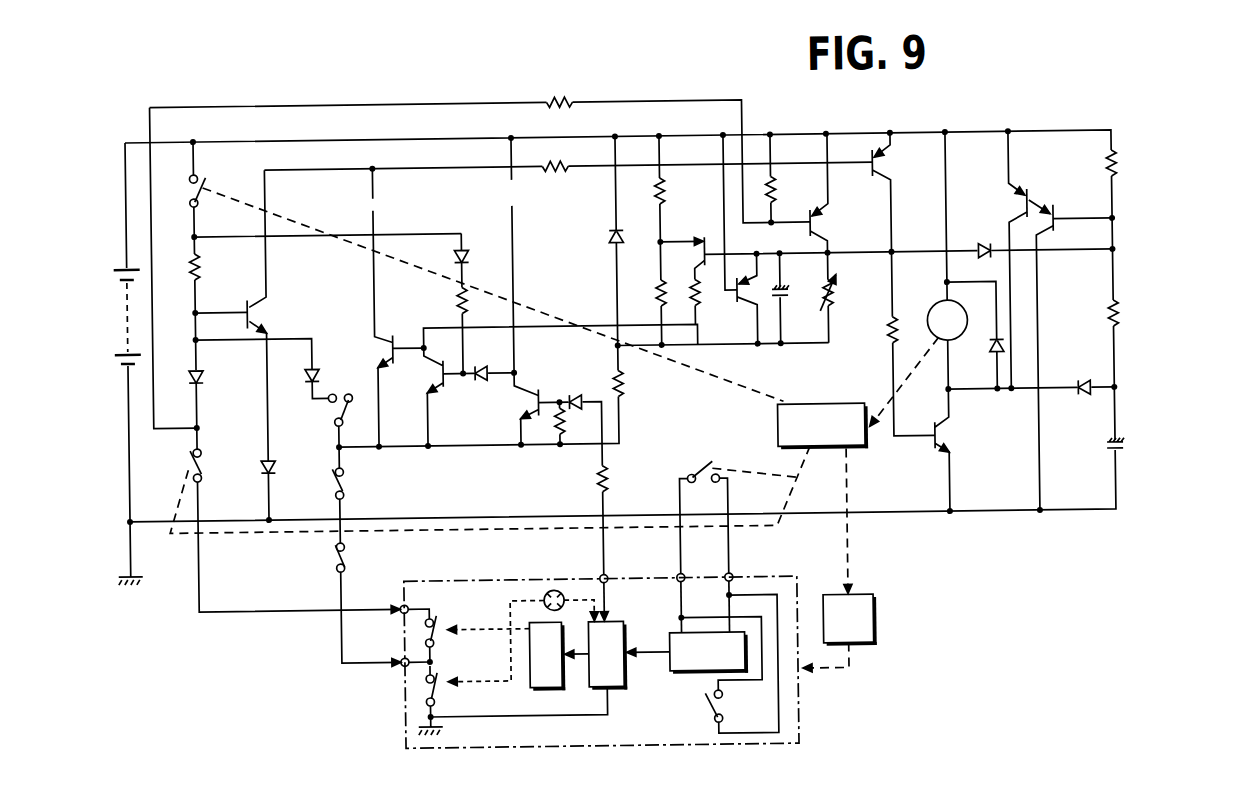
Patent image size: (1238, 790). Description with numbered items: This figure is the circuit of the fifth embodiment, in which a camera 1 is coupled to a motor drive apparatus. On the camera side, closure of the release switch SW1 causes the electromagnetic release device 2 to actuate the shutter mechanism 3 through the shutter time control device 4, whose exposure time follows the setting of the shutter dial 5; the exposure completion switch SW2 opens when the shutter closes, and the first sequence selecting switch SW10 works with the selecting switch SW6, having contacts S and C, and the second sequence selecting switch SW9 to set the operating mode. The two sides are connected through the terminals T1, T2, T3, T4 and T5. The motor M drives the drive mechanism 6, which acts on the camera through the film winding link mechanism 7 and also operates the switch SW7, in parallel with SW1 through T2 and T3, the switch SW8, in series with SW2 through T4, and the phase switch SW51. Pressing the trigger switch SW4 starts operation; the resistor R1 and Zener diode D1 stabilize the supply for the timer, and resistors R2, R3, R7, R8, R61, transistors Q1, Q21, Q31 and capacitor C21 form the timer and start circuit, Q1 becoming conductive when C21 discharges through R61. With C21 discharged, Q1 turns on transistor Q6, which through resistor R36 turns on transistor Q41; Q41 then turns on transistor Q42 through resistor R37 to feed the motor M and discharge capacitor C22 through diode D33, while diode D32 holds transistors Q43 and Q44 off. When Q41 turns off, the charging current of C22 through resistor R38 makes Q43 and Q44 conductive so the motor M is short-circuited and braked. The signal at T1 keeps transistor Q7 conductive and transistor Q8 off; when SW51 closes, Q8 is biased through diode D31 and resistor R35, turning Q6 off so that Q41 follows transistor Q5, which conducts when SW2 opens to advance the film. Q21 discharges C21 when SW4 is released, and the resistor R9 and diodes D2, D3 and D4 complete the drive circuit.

The resistor R8 is at (560, 97).
The phase switch SW51 is at (205, 180).
The resistor R9 is at (200, 272).
The transistor Q5 is at (250, 310).
The diode D3 is at (314, 368).
The switch contact S is at (330, 396).
The selecting switch SW6 is at (337, 416).
The switch contact C is at (352, 420).
The transistor Q6 is at (388, 348).
The resistor R35 is at (458, 300).
The diode D31 is at (460, 250).
The resistor R36 is at (555, 176).
The Zener diode D1 is at (605, 245).
The resistor R3 is at (656, 291).
The resistor R2 is at (664, 196).
The transistor Q1 is at (702, 251).
The transistor Q21 is at (731, 305).
The capacitor C21 is at (788, 306).
The resistor R7 is at (773, 196).
The transistor Q31 is at (824, 232).
The transistor Q41 is at (888, 177).
The transistor Q43 is at (1021, 206).
The transistor Q44 is at (1047, 222).
The diode D32 is at (978, 258).
The resistor R61 is at (835, 303).
The resistor R37 is at (888, 356).
The motor M is at (947, 320).
The resistor R38 is at (1108, 332).
The diode D2 is at (203, 383).
The switch SW8 is at (200, 456).
The transistor Q8 is at (437, 384).
The transistor Q7 is at (530, 411).
The resistor R1 is at (626, 387).
The diode D4 is at (262, 472).
The trigger switch SW4 is at (347, 485).
The second sequence selecting switch SW9 is at (336, 564).
The switch SW7 is at (700, 470).
The drive mechanism 6 is at (823, 426).
The transistor Q42 is at (950, 451).
The diode D33 is at (1080, 409).
The capacitor C22 is at (1128, 459).
The camera 1 is at (792, 722).
The terminal T4 is at (396, 609).
The terminal T5 is at (394, 670).
The exposure completion switch SW2 is at (432, 649).
The first sequence selecting switch SW10 is at (432, 701).
The shutter dial 5 is at (538, 604).
The shutter mechanism 3 is at (547, 656).
The shutter time control device 4 is at (617, 655).
The electromagnetic release device 2 is at (709, 653).
The terminal T1 is at (603, 581).
The terminal T3 is at (678, 581).
The terminal T2 is at (727, 581).
The release switch SW1 is at (705, 714).
The film winding link mechanism 7 is at (870, 618).